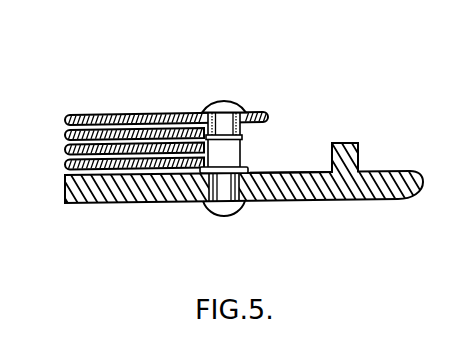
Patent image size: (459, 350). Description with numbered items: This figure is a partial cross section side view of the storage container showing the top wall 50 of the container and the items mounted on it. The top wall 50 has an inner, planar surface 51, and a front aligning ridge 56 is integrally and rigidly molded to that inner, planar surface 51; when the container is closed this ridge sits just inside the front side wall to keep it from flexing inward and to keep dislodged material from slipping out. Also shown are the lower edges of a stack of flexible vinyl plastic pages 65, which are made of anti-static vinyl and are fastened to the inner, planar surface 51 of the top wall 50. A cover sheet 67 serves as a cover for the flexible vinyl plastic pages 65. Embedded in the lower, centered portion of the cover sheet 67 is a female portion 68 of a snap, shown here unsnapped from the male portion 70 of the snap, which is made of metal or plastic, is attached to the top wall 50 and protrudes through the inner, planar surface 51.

The flexible vinyl plastic pages 65 is at (143, 84).
The cover sheet 67 is at (108, 115).
The female portion 68 is at (249, 106).
The male portion 70 is at (238, 208).
The top wall 50 is at (347, 193).
The inner, planar surface 51 is at (293, 170).
The front aligning ridge 56 is at (347, 142).